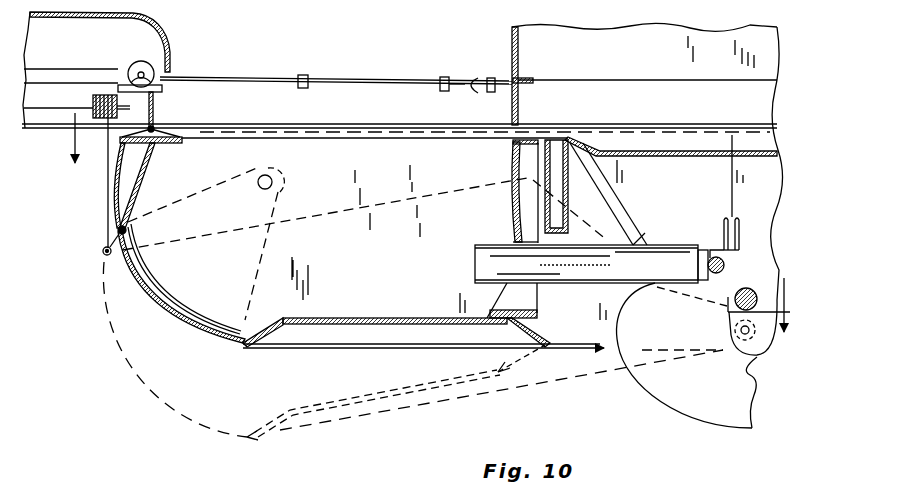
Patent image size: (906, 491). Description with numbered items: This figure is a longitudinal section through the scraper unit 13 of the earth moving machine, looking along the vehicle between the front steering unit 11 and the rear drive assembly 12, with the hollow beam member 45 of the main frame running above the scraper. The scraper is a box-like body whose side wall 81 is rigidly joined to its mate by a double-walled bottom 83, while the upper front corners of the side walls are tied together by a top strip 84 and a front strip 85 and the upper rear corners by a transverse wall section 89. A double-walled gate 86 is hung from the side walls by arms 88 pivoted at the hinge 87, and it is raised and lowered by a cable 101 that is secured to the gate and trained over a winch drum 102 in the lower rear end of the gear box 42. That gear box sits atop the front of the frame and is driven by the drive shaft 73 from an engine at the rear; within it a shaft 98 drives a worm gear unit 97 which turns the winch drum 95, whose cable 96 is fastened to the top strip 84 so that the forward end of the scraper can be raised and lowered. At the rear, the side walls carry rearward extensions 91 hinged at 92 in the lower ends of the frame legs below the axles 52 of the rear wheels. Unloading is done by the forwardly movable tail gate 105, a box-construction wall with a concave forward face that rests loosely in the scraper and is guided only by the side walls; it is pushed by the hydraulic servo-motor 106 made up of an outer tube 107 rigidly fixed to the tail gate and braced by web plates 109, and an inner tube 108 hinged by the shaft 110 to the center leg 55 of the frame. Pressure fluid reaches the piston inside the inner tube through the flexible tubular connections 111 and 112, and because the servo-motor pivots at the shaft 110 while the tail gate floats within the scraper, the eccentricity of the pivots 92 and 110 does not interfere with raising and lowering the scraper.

The gear box 42 is at (170, 38).
The beam member 45 is at (264, 82).
The drive shaft 73 is at (384, 82).
The winch drum 95 is at (138, 61).
The worm gear unit 97 is at (133, 73).
The shaft 98 is at (50, 77).
The winch drum 102 is at (93, 99).
The cable 96 is at (155, 107).
The top strip 84 is at (165, 144).
The front strip 85 is at (115, 178).
The front steering unit 11 is at (425, 239).
The cable 101 is at (108, 222).
The scraper unit 13 is at (80, 286).
The gate 86 is at (180, 306).
The hinge 87 is at (273, 182).
The arm 88 is at (280, 240).
The side wall 81 is at (398, 258).
The bottom 83 is at (405, 326).
The rearward extension 91 is at (600, 348).
The tail gate 105 is at (518, 172).
The transverse wall section 89 is at (562, 212).
The web plate 109 is at (590, 257).
The hydraulic servo-motor 106 is at (591, 264).
The outer tube 107 is at (603, 281).
The inner tube 108 is at (711, 252).
The center leg 55 is at (707, 212).
The flexible tubular connection 111 is at (730, 217).
The flexible tubular connection 112 is at (740, 217).
The shaft 110 is at (733, 260).
The axle 52 is at (759, 284).
The hinge 92 is at (735, 329).
The rear drive assembly 12 is at (648, 62).